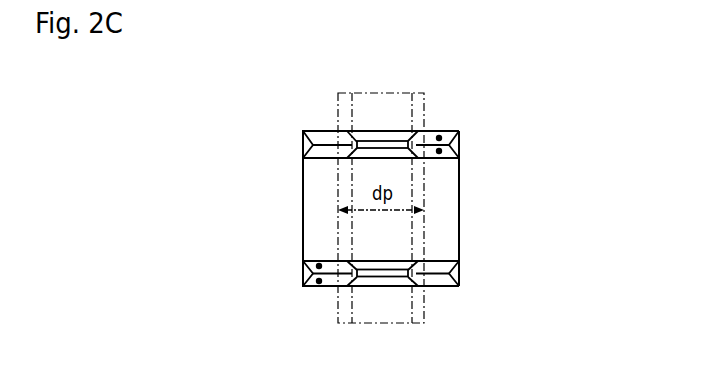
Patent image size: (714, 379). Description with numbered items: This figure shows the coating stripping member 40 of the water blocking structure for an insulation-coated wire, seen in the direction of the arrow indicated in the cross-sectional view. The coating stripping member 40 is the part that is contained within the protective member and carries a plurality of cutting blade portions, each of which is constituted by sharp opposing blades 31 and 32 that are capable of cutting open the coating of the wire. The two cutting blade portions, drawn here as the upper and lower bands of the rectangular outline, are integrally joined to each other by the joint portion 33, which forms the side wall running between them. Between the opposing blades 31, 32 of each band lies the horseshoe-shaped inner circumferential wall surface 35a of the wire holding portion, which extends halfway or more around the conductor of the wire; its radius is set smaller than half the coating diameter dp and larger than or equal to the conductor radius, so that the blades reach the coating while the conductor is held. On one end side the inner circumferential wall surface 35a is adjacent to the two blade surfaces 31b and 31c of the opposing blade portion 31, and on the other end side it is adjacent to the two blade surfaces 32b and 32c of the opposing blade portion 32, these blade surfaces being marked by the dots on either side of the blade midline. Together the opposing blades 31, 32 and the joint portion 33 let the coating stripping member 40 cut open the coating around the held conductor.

The coating stripping member 40 is at (296, 165).
The joint portion 33 is at (448, 230).
The opposing blade 32 is at (326, 134).
The opposing blade 31 is at (433, 134).
The inner circumferential wall surface 35a is at (380, 142).
The blade surface 31b is at (439, 138).
The blade surface 31c is at (439, 153).
The blade surface 32b is at (319, 266).
The blade surface 32c is at (319, 284).